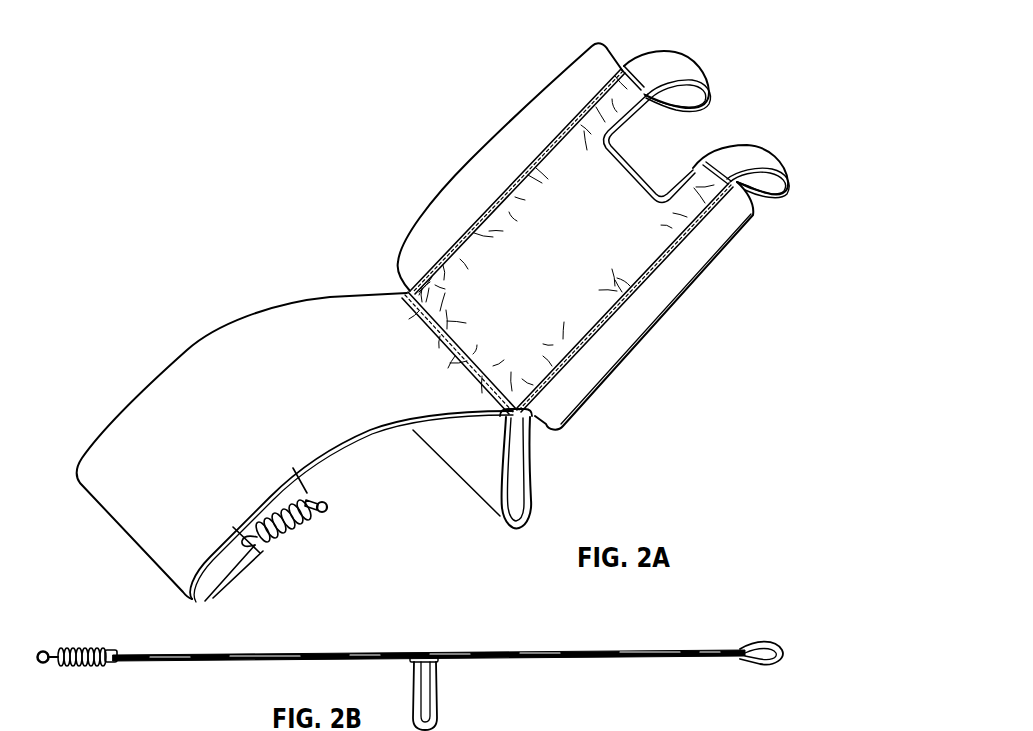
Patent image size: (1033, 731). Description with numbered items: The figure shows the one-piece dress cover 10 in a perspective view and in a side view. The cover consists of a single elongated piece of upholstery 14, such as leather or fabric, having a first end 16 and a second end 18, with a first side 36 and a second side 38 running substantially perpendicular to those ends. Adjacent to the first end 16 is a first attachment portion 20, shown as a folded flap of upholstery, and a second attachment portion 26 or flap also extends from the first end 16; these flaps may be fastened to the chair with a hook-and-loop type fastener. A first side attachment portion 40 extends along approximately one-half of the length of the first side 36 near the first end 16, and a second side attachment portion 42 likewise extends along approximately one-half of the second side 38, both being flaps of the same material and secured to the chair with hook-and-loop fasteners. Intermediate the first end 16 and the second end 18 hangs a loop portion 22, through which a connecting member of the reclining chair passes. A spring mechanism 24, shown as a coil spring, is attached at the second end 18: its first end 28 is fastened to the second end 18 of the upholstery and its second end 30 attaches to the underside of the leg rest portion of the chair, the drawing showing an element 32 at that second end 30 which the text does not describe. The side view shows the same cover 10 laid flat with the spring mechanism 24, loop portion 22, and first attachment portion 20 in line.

In FIG. 2A, the one-piece cover 10 is at (669, 357).
In FIG. 2B, the one-piece cover 10 is at (113, 628).
In FIG. 2A, the upholstery 14 is at (223, 375).
In FIG. 2B, the upholstery 14 is at (527, 650).
In FIG. 2A, the first end 16 is at (622, 68).
In FIG. 2A, the second end 18 is at (263, 555).
In FIG. 2A, the first attachment portion 20 is at (692, 64).
In FIG. 2B, the first attachment portion 20 is at (770, 640).
In FIG. 2A, the loop portion 22 is at (533, 497).
In FIG. 2B, the loop portion 22 is at (437, 703).
In FIG. 2A, the spring mechanism 24 is at (290, 535).
In FIG. 2B, the spring mechanism 24 is at (83, 672).
In FIG. 2A, the second attachment portion 26 is at (775, 160).
In FIG. 2A, the first end of spring mechanism 28 is at (220, 587).
In FIG. 2B, the first end of spring mechanism 28 is at (112, 663).
In FIG. 2A, the second end of spring mechanism 30 is at (308, 498).
In FIG. 2A, the ring 32 is at (323, 513).
In FIG. 2B, the ring 32 is at (43, 668).
In FIG. 2A, the first side 36 is at (323, 307).
In FIG. 2A, the second side 38 is at (400, 433).
In FIG. 2A, the first side attachment portion 40 is at (558, 84).
In FIG. 2B, the first side attachment portion 40 is at (620, 718).
In FIG. 2A, the second side attachment portion 42 is at (717, 238).